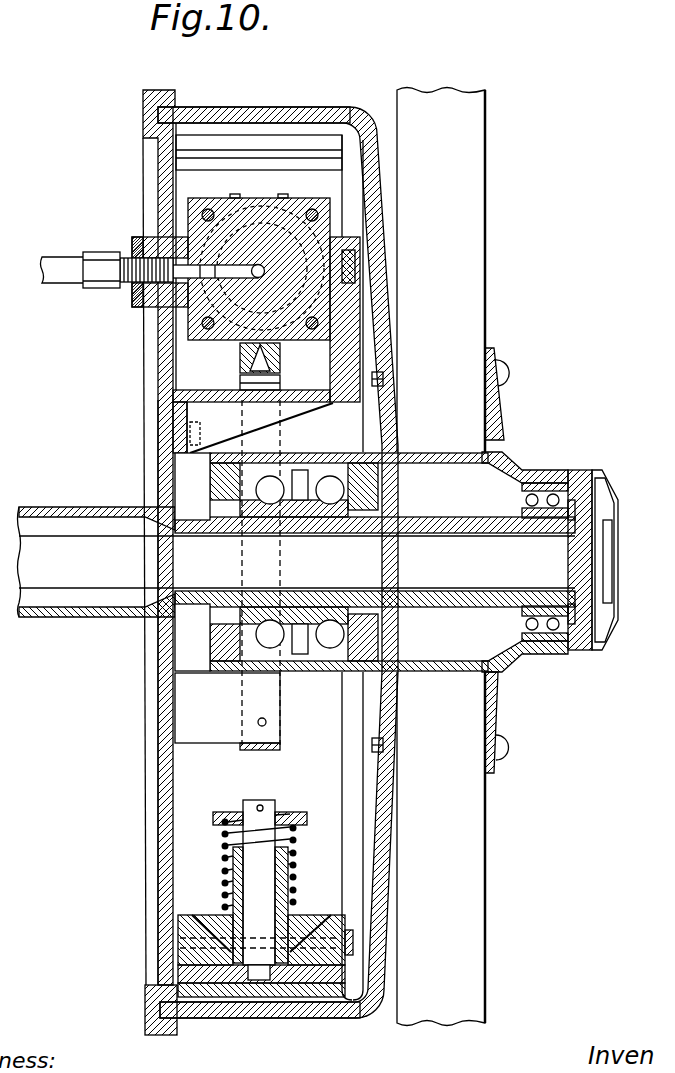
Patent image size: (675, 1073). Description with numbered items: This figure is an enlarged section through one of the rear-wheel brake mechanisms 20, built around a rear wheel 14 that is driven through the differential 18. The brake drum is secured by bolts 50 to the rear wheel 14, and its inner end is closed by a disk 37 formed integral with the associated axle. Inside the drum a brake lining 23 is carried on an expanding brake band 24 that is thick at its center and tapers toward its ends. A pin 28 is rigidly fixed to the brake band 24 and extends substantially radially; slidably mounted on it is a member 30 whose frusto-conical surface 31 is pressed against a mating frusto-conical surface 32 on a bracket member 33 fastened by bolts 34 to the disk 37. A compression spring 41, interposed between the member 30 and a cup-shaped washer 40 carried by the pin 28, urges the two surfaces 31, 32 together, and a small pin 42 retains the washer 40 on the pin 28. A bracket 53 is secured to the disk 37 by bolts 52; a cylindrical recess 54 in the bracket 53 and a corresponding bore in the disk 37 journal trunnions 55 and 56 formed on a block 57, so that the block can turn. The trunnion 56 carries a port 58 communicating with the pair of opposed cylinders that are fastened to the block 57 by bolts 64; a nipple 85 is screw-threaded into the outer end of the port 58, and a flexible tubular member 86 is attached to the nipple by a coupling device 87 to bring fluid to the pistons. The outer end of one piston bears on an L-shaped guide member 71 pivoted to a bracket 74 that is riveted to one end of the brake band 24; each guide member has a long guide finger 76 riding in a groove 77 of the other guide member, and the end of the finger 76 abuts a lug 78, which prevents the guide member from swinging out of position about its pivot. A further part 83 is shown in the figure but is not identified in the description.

The rear wheel 14 is at (486, 261).
The differential 18 is at (63, 507).
The brake mechanism 20 is at (141, 130).
The brake lining 23 is at (331, 1002).
The brake band 24 is at (292, 985).
The pin 28 is at (262, 99).
The member 30 is at (289, 883).
The frusto-conical surface 31 is at (225, 921).
The frusto-conical surface 32 is at (178, 930).
The bracket member 33 is at (183, 956).
The bolts 34 is at (348, 930).
The disk 37 is at (147, 995).
The cup-shaped washer 40 is at (222, 812).
The compression spring 41 is at (222, 848).
The pin 42 is at (260, 805).
The bolts 50 is at (384, 380).
The bolts 52 is at (186, 430).
The bracket 53 is at (166, 392).
The cylindrical recess 54 is at (161, 228).
The trunnion 55 is at (355, 278).
The trunnion 56 is at (176, 305).
The block 57 is at (296, 190).
The port 58 is at (188, 318).
The bolts 64 is at (209, 209).
The guide member 71 is at (241, 348).
The bracket 74 is at (183, 177).
The guide finger 76 is at (281, 360).
The groove 77 is at (281, 383).
The lug 78 is at (240, 383).
The wedge 83 is at (281, 440).
The nipple 85 is at (128, 285).
The flexible tubular member 86 is at (50, 257).
The coupling device 87 is at (93, 254).